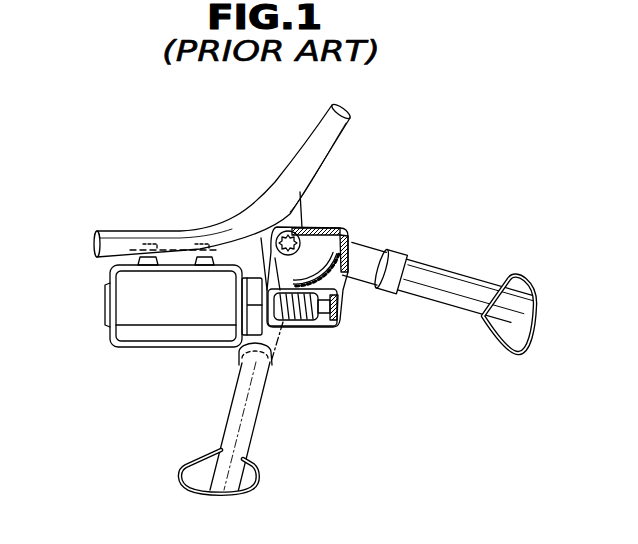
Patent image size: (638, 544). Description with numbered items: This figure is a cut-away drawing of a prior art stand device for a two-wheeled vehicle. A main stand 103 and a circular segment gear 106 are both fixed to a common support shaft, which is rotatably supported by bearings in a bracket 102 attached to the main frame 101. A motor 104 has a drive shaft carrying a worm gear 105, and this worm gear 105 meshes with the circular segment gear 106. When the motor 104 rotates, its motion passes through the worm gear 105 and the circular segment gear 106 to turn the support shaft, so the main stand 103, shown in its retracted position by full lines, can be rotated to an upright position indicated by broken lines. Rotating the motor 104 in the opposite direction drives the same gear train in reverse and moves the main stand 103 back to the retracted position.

The main frame 101 is at (310, 158).
The bracket 102 is at (290, 217).
The main stand 103 is at (448, 276).
The motor 104 is at (167, 325).
The worm gear 105 is at (303, 328).
The circular segment gear 106 is at (350, 260).